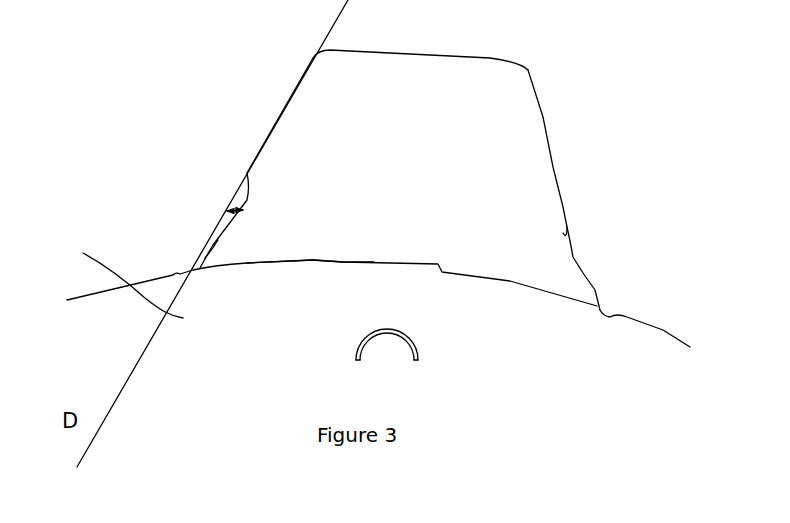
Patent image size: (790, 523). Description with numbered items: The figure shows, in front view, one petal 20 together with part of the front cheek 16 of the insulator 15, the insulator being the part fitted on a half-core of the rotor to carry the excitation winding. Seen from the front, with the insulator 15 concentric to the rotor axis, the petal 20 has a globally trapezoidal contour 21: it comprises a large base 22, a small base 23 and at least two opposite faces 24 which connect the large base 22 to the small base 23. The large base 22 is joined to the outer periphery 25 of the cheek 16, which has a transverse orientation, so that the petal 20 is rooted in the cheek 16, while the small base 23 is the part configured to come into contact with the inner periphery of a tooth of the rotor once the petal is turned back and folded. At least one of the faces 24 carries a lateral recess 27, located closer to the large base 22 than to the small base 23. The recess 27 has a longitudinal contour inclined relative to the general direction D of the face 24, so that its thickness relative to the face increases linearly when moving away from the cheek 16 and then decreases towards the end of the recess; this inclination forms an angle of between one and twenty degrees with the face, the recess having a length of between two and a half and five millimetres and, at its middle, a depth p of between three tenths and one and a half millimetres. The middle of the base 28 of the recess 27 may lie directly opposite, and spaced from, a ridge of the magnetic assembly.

The insulator 15 is at (132, 202).
The front cheek 16 is at (115, 272).
The petal 20 is at (282, 148).
The trapezoidal contour 21 is at (410, 167).
The large base 22 is at (374, 260).
The small base 23 is at (491, 62).
The face 24 is at (248, 173).
The outer periphery 25 is at (441, 265).
The lateral recess 27 is at (214, 209).
The base of the recess 28 is at (213, 238).